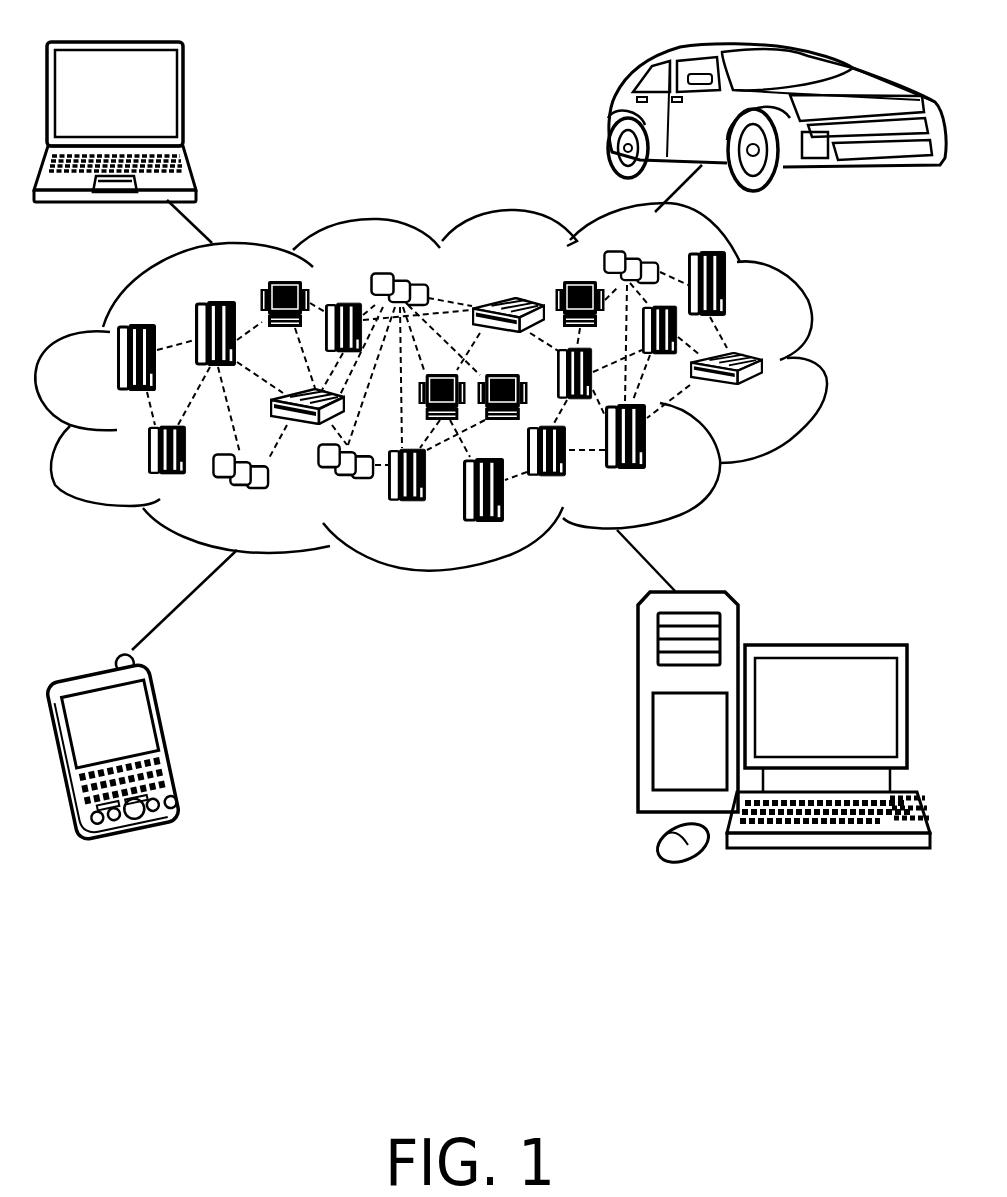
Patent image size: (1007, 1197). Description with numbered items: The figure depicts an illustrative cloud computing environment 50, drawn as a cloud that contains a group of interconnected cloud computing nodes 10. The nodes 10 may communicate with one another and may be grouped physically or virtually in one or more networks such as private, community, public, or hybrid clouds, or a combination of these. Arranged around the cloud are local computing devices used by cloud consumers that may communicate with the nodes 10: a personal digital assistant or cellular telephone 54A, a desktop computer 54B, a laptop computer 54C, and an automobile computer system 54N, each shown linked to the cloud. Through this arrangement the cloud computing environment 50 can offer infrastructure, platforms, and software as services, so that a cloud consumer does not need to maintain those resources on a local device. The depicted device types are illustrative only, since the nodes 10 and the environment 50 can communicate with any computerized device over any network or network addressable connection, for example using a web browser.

The cloud computing node 10 is at (766, 394).
The cloud computing environment 50 is at (827, 368).
The personal digital assistant or cellular telephone 54A is at (177, 738).
The desktop computer 54B is at (823, 645).
The laptop computer 54C is at (185, 103).
The automobile computer system 54N is at (610, 118).